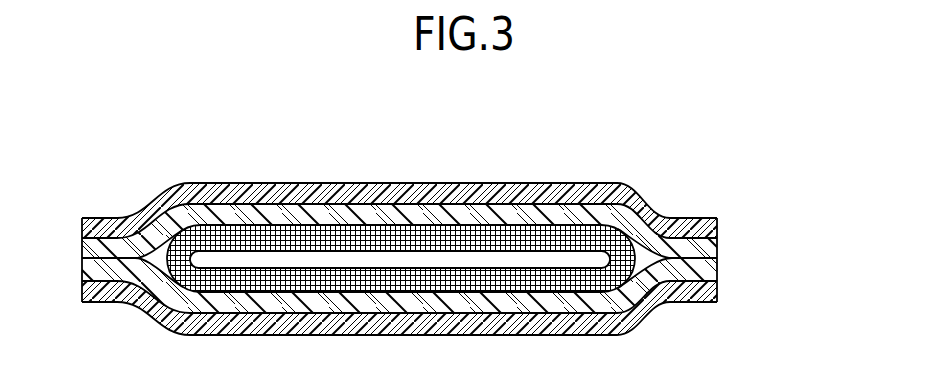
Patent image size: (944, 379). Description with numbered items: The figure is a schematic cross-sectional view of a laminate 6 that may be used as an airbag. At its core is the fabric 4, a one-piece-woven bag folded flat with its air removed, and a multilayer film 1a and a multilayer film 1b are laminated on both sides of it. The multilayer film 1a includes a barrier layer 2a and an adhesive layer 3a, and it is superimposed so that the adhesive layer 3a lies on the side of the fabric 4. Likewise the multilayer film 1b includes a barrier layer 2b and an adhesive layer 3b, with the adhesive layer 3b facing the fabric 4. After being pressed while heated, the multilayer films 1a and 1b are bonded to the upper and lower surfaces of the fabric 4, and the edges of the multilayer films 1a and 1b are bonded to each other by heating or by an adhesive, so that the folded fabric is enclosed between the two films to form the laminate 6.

The laminate 6 is at (718, 78).
The multilayer film 1a is at (790, 197).
The multilayer film 1b is at (790, 262).
The barrier layer 2a is at (707, 227).
The adhesive layer 3a is at (707, 249).
The adhesive layer 3b is at (707, 267).
The barrier layer 2b is at (707, 288).
The fabric 4 is at (601, 226).